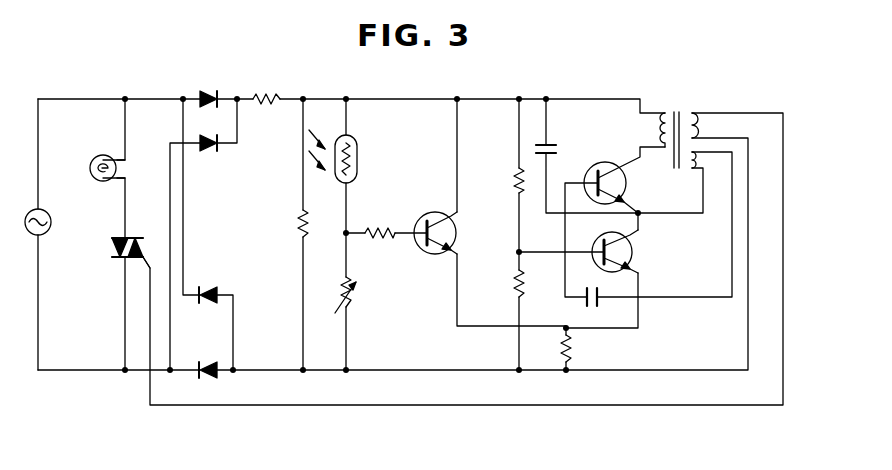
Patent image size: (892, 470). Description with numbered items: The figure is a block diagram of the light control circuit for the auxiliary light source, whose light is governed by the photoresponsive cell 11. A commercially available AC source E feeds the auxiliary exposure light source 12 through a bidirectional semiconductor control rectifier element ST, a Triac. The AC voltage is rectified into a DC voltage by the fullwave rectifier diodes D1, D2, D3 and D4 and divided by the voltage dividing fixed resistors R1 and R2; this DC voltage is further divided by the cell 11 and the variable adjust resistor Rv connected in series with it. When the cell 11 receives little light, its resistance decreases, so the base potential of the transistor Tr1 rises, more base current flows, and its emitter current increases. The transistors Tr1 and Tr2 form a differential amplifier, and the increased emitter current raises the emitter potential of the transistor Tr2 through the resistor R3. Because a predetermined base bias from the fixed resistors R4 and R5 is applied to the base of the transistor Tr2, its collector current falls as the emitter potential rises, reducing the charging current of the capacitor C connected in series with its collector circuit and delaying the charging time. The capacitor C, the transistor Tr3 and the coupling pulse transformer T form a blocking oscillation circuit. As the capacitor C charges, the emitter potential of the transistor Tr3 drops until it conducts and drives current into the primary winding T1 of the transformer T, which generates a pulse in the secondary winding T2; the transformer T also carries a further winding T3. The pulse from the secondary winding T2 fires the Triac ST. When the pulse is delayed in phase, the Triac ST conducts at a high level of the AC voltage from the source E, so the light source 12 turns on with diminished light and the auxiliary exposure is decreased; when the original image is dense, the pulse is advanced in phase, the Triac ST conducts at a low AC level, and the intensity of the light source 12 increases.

The photoresponsive cell 11 is at (358, 147).
The auxiliary exposure light source 12 is at (105, 156).
The AC source E is at (46, 222).
The bidirectional semiconductor control rectifier element ST is at (132, 241).
The fullwave rectifier diode D1 is at (207, 85).
The fullwave rectifier diode D2 is at (207, 158).
The fullwave rectifier diode D3 is at (207, 283).
The fullwave rectifier diode D4 is at (207, 357).
The voltage dividing fixed resistor R1 is at (266, 84).
The voltage dividing fixed resistor R2 is at (315, 222).
The voltage dividing fixed resistor R3 is at (580, 348).
The voltage dividing fixed resistor R4 is at (501, 183).
The voltage dividing fixed resistor R5 is at (501, 286).
The variable adjust resistor Rv is at (357, 295).
The capacitor C is at (554, 151).
The transistor Tr1 is at (411, 246).
The transistor Tr2 is at (628, 251).
The transistor Tr3 is at (624, 174).
The coupling pulse transformer T is at (681, 130).
The primary winding T1 is at (650, 130).
The secondary winding T2 is at (709, 125).
The transformer winding T3 is at (709, 163).